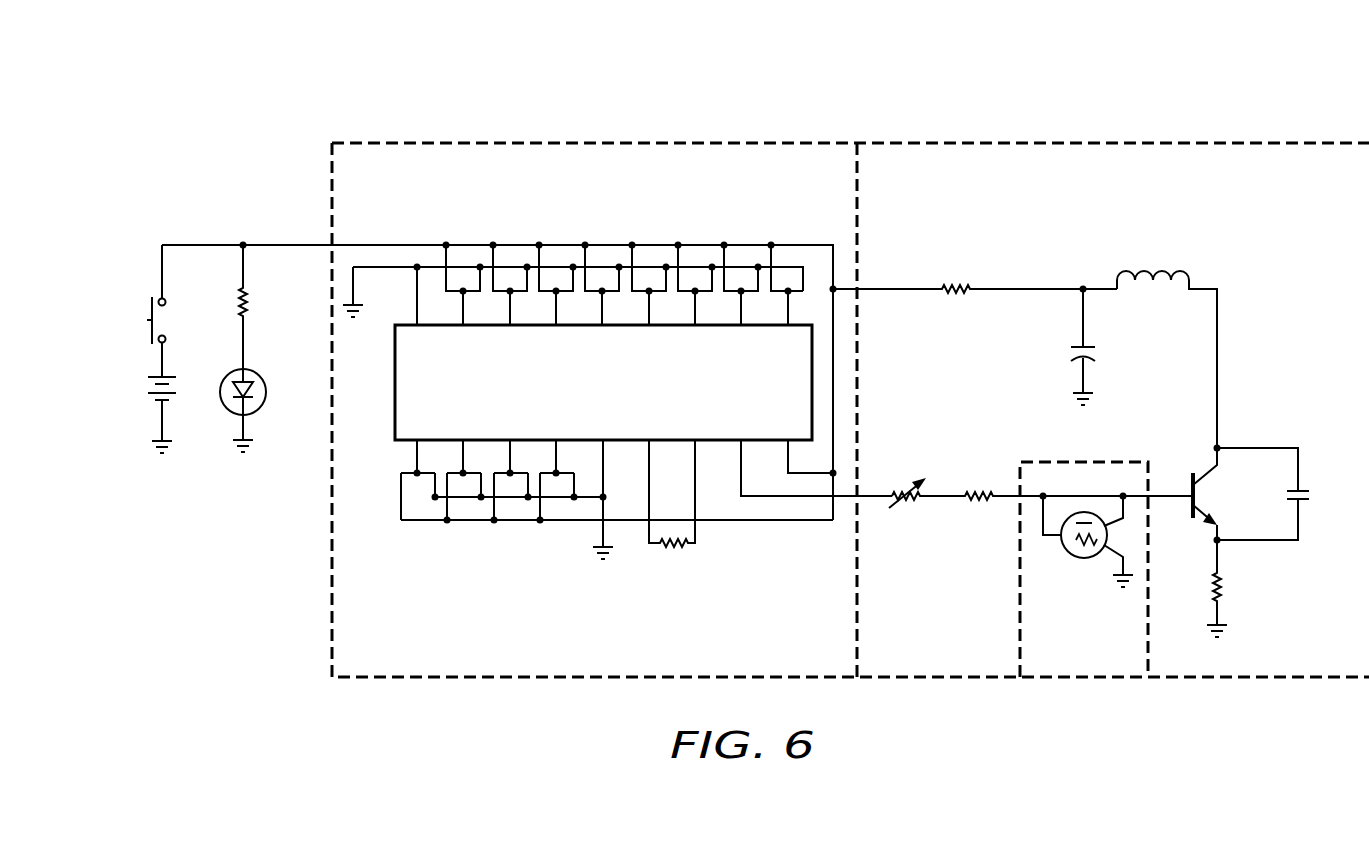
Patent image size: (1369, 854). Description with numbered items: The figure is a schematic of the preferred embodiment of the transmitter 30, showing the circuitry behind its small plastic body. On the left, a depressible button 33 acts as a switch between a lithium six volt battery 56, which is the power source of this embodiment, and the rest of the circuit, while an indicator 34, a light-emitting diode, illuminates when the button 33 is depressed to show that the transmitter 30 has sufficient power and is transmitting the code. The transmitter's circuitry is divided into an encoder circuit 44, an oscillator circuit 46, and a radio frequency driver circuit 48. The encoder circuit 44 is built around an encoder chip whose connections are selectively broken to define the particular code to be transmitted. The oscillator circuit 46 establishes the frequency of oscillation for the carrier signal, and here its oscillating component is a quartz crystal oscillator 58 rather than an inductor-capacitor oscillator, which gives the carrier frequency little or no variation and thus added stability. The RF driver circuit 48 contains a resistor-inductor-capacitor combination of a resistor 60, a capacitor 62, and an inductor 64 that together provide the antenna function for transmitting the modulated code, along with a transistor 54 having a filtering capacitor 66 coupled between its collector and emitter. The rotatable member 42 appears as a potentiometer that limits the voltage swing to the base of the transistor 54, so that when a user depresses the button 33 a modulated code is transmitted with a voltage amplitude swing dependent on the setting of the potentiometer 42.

The transmitter 30 is at (194, 101).
The depressible button 33 is at (106, 312).
The lithium six volt battery 56 is at (134, 444).
The indicator 34 is at (262, 425).
The encoder circuit 44 is at (397, 647).
The RF driver circuit 48 is at (1346, 645).
The resistor 60 is at (958, 283).
The capacitor 62 is at (1071, 352).
The inductor 64 is at (1182, 270).
The transistor 54 is at (1194, 449).
The filtering capacitor 66 is at (1306, 486).
The rotatable member 42 is at (900, 486).
The oscillator circuit 46 is at (1018, 592).
The quartz crystal oscillator 58 is at (1082, 560).